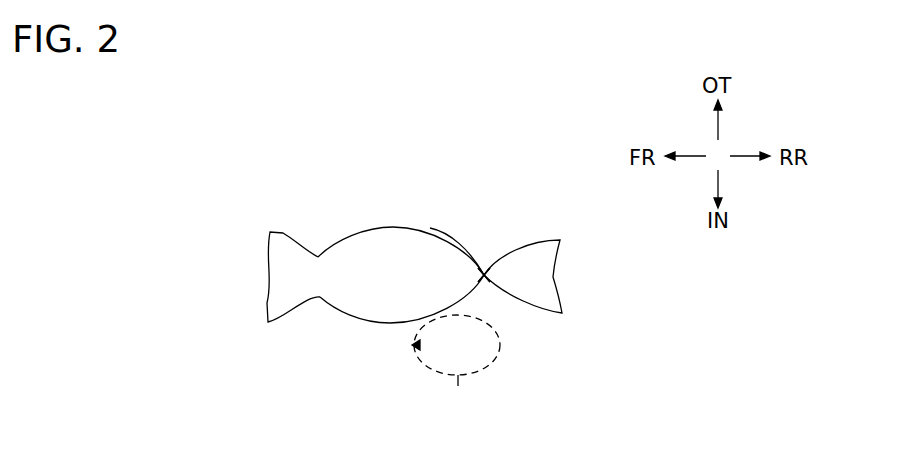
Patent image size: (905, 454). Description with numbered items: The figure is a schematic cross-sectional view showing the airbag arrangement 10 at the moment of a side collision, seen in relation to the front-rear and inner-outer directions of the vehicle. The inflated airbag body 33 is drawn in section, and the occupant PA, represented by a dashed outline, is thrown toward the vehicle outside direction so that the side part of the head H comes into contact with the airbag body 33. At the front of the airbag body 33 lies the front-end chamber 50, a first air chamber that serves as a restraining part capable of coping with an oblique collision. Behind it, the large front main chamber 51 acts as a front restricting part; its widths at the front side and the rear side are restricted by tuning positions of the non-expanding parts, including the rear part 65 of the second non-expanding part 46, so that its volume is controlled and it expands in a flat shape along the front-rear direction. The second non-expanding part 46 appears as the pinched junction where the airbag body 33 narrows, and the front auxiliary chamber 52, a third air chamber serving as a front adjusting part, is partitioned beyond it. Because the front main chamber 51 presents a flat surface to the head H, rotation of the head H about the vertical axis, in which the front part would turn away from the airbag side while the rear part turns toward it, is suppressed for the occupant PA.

The step (footrest) assembly 10 is at (408, 184).
The airbag body 33 is at (348, 240).
The front-end chamber 50 is at (288, 253).
The front main chamber 51 is at (440, 258).
The second non-expanding part 46 is at (485, 272).
The rear part 65 is at (485, 272).
The front auxiliary chamber 52 is at (553, 277).
The occupant PA is at (505, 358).
The head H is at (458, 399).